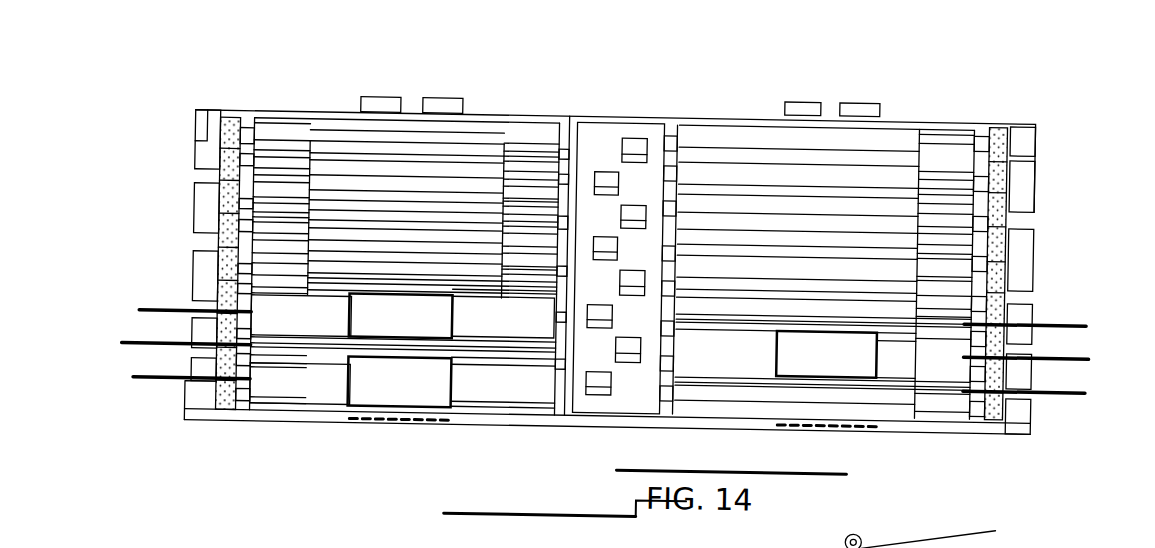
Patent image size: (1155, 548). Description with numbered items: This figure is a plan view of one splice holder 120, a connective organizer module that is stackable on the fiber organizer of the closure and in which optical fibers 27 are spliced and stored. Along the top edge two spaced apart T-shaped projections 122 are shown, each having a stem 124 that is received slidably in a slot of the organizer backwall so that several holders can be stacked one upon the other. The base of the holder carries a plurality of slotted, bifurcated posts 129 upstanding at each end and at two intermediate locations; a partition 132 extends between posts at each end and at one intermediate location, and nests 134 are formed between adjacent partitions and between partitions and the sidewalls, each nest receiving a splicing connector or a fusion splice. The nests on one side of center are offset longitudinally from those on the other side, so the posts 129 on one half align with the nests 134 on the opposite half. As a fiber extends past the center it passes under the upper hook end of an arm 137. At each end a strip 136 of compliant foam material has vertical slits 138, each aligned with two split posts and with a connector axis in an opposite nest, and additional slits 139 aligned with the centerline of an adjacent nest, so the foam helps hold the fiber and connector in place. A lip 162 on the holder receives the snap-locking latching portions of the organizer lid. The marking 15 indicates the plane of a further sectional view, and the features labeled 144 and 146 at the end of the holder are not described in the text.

The section line for FIG. 15 is at (405, 47).
The optical fibers 27 is at (163, 318).
The splice holder 120 is at (245, 431).
The T-shaped projections 122 is at (382, 103).
The stem 124 is at (412, 110).
The slotted posts 129 is at (557, 369).
The partition 132 is at (400, 214).
The nests 134 is at (437, 280).
The strip of compliant material 136 is at (1002, 125).
The arm 137 is at (603, 394).
The vertical slits 138 is at (993, 155).
The additional slits 139 is at (995, 350).
The end cap 144 is at (1037, 126).
The bearing 146 is at (1037, 150).
The lip 162 is at (422, 433).